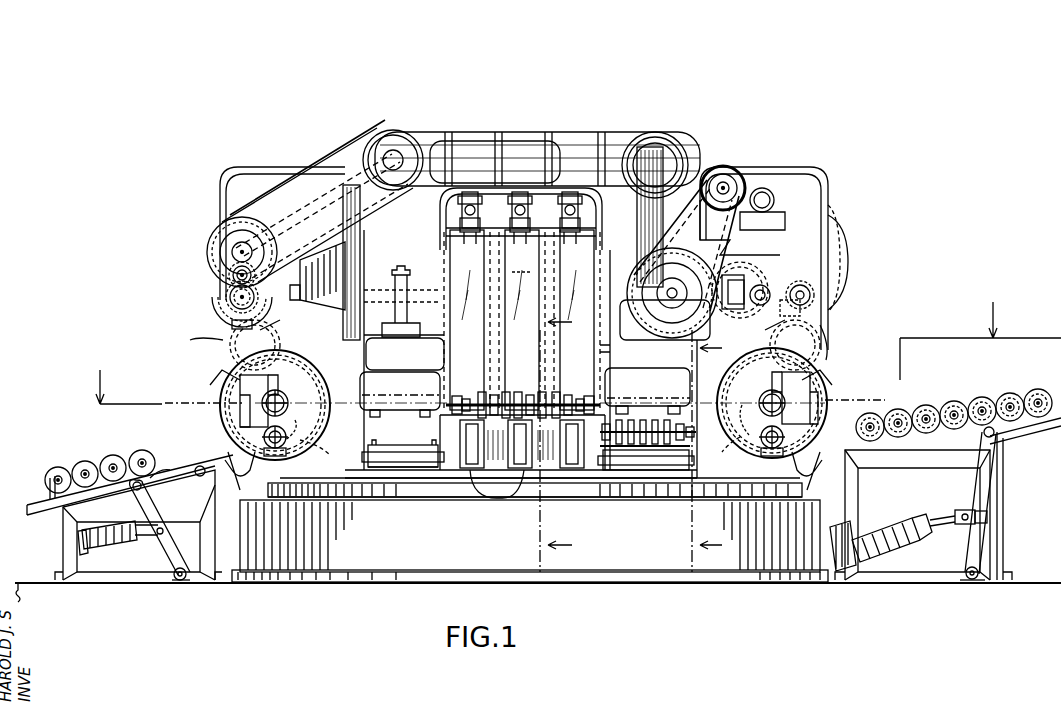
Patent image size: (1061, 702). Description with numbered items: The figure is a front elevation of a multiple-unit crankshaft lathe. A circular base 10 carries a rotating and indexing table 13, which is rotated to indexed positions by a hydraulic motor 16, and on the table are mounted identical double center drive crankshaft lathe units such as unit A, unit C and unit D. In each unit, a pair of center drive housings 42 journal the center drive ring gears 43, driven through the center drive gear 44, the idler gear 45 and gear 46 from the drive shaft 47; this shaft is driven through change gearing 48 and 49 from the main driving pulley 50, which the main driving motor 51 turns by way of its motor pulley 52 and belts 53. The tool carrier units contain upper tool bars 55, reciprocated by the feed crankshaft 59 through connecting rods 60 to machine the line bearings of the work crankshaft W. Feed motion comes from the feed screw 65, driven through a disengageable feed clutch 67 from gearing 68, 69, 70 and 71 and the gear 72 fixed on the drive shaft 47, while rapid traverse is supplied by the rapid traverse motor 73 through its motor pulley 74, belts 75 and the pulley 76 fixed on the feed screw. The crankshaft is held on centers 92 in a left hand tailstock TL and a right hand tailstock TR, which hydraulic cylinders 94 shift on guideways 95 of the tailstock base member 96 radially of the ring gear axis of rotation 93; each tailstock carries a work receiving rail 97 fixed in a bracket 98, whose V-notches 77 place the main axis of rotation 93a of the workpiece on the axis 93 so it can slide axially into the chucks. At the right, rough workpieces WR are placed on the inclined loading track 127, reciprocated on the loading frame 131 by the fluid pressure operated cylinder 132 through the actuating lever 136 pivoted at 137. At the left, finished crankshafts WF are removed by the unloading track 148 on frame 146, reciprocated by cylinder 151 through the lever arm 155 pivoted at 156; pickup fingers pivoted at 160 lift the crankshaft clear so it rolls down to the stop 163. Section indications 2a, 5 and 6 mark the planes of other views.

The circular base 10 is at (322, 566).
The rotating and indexing table 13 is at (337, 486).
The hydraulic motor 16 is at (878, 562).
The section line 2a is at (577, 372).
The section line 5 is at (702, 451).
The section line 6 is at (552, 440).
The center drive housings 42 is at (222, 413).
The center drive ring gears 43 is at (240, 383).
The center drive gear 44 is at (511, 391).
The idler gear 45 is at (232, 355).
The gear 46 is at (215, 312).
The drive shaft 47 is at (228, 298).
The change gearing 48 is at (230, 281).
The change gearing 49 is at (225, 268).
The main driving pulley 50 is at (215, 235).
The main driving motor 51 is at (383, 140).
The motor pulley 52 is at (405, 140).
The belts 53 is at (300, 183).
The upper tool bars 55 is at (522, 320).
The feed crankshaft 59 is at (530, 200).
The connecting rods 60 is at (470, 244).
The feed screw 65 is at (378, 290).
The disengageable feed clutch 67 is at (335, 328).
The gearing 68 is at (330, 270).
The gearing 69 is at (755, 253).
The gearing 70 is at (764, 288).
The gearing 71 is at (770, 268).
The gear 72 is at (836, 256).
The rapid traverse motor 73 is at (732, 166).
The motor pulley 74 is at (330, 178).
The belts 75 is at (345, 214).
The pulley 76 is at (380, 328).
The V-notches 77 is at (70, 457).
The centers 92 is at (468, 395).
The axis of rotation 93 is at (283, 390).
The main axis of rotation 93a is at (265, 450).
The hydraulic cylinders 94 is at (406, 312).
The guideways 95 is at (280, 327).
The tailstock base member 96 is at (520, 437).
The work receiving rail 97 is at (428, 452).
The bracket 98 is at (388, 452).
The loading track 127 is at (915, 446).
The loading frame 131 is at (998, 543).
The fluid pressure operated cylinder 132 is at (905, 518).
The actuating lever 136 is at (970, 535).
The pivot 137 is at (970, 578).
The frame 146 is at (62, 545).
The unloading track 148 is at (173, 466).
The fluid pressure operated cylinder 151 is at (120, 552).
The lever arm 155 is at (168, 543).
The pivot 156 is at (177, 578).
The pivot 160 is at (200, 466).
The stop 163 is at (45, 490).
The double center drive crankshaft lathe unit A is at (828, 320).
The double center drive crankshaft lathe unit C is at (199, 337).
The double center drive crankshaft lathe unit D is at (521, 271).
The left hand tailstock TL is at (735, 372).
The right hand tailstock TR is at (302, 378).
The work crankshaft W is at (522, 444).
The finished crankshaft WF is at (288, 430).
The rough workpiece WR is at (748, 428).